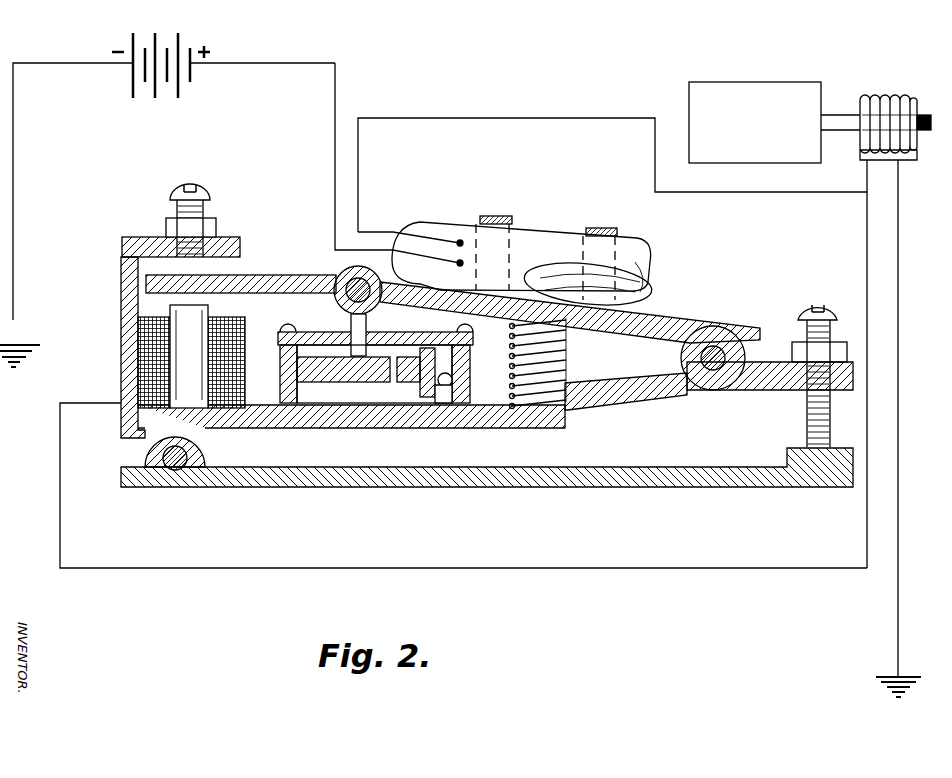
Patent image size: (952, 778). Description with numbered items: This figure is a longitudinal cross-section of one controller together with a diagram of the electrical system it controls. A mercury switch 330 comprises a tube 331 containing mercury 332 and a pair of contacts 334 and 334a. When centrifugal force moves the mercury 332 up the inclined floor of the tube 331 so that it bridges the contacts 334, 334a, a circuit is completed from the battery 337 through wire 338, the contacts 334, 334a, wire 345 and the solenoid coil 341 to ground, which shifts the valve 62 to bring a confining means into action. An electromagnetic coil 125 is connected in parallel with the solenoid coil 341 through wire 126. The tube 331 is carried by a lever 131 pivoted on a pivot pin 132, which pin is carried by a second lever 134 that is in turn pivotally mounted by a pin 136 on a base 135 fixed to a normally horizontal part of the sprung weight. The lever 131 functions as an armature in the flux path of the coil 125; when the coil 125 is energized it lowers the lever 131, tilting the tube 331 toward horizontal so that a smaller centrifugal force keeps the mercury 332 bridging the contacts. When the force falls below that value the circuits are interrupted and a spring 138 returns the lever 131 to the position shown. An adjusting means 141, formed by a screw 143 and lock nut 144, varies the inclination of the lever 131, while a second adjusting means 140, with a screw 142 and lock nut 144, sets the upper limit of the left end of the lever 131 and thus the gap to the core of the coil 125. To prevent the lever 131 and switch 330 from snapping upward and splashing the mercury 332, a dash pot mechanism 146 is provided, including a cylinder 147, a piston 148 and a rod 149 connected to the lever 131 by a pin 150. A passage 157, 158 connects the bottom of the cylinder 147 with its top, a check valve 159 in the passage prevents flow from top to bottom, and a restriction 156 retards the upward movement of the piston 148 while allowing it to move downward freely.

The battery 337 is at (178, 40).
The wire 338 is at (306, 62).
The wire 345 is at (448, 118).
The valve 62 is at (719, 87).
The solenoid coil 341 is at (872, 96).
The wire 126 is at (552, 568).
The electromagnetic coil 125 is at (138, 350).
The adjusting means 140 is at (122, 256).
The screw 142 is at (188, 194).
The lock nut 144 is at (170, 226).
The screw 143 is at (796, 322).
The adjusting means 141 is at (800, 428).
The pin 150 is at (344, 270).
The lever 131 is at (656, 316).
The pivot pin 132 is at (715, 375).
The lever 134 is at (604, 398).
The base 135 is at (492, 487).
The pin 136 is at (166, 482).
The dash pot mechanism 146 is at (319, 320).
The rod 149 is at (367, 335).
The cylinder 147 is at (306, 403).
The piston 148 is at (348, 382).
The restriction 156 is at (392, 380).
The passage 157 is at (436, 390).
The passage 158 is at (448, 364).
The check valve 159 is at (455, 393).
The spring 138 is at (560, 374).
The mercury switch 330 is at (539, 218).
The tube 331 is at (588, 216).
The mercury 332 is at (660, 272).
The contact 334 is at (440, 242).
The contact 334a is at (450, 256).